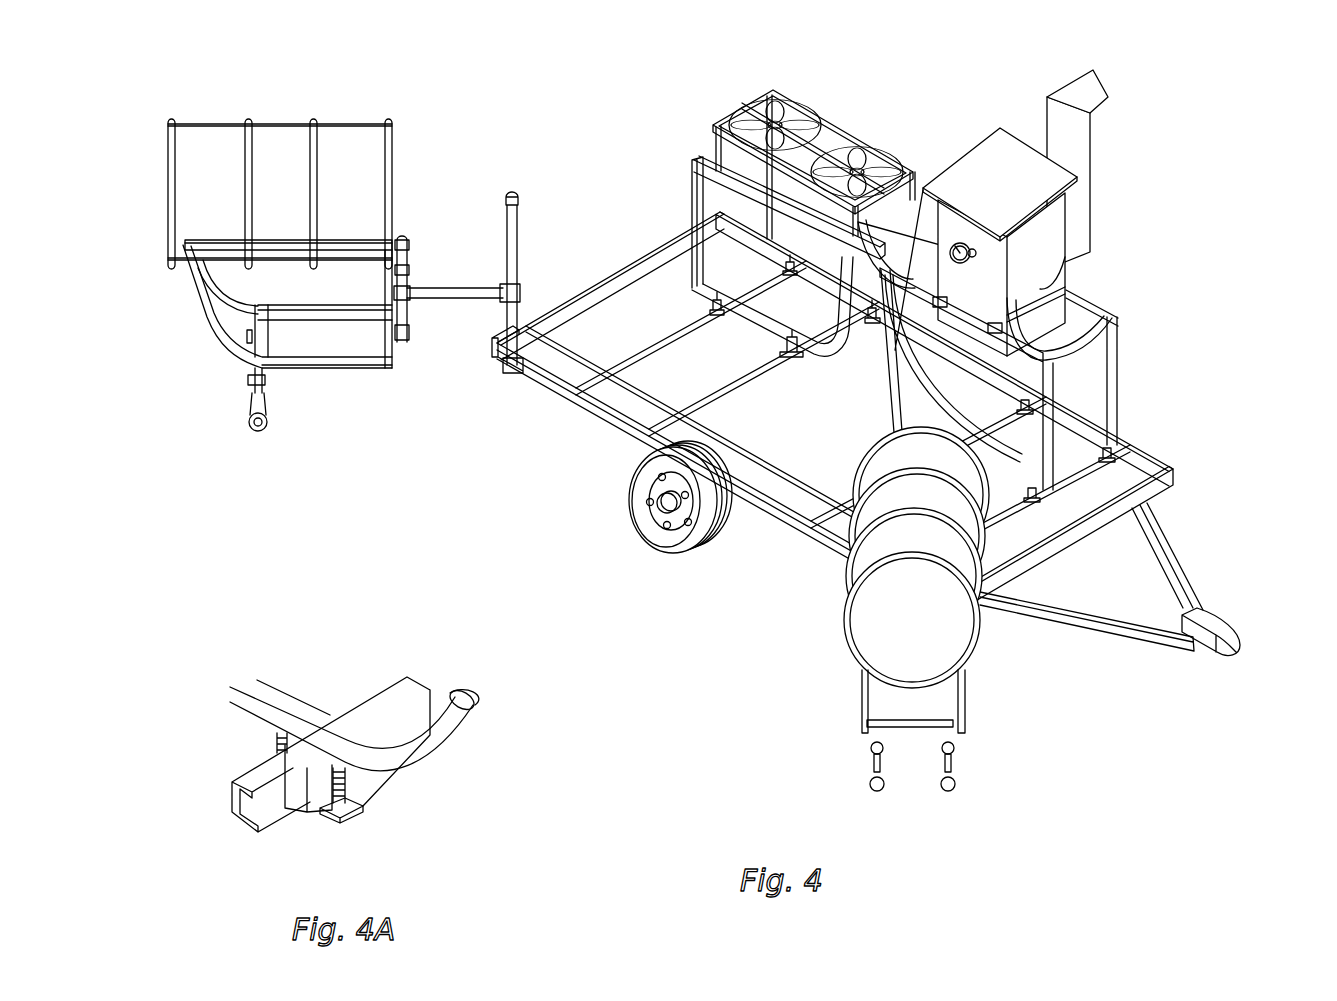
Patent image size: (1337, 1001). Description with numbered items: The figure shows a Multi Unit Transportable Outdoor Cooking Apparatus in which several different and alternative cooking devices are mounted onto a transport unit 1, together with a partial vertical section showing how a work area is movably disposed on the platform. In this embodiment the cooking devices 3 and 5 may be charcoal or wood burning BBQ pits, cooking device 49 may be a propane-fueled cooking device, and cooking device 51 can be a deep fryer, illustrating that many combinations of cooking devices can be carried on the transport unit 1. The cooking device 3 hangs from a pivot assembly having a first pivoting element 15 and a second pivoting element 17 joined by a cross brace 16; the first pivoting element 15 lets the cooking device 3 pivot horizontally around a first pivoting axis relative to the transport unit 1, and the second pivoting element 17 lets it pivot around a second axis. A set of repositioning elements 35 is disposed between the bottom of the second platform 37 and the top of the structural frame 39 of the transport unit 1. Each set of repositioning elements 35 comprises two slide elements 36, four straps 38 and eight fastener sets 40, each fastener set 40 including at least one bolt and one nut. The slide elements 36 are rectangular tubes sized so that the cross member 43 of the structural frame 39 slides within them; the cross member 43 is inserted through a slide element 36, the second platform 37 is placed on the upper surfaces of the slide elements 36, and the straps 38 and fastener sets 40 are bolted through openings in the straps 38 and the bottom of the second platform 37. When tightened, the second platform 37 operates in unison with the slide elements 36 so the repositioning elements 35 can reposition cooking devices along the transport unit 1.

In FIG. 4, the transport unit 1 is at (904, 427).
In FIG. 4, the cooking device 3 is at (206, 122).
In FIG. 4, the cooking device 5 is at (904, 610).
In FIG. 4, the first pivoting element 15 is at (522, 227).
In FIG. 4, the cross brace 16 is at (428, 288).
In FIG. 4, the second pivoting element 17 is at (400, 238).
In FIG. 4, the repositioning elements 35 is at (797, 357).
In FIG. 4A, the repositioning elements 35 is at (542, 809).
In FIG. 4A, the slide elements 36 is at (347, 780).
In FIG. 4, the second platform 37 is at (690, 183).
In FIG. 4A, the second platform 37 is at (467, 742).
In FIG. 4A, the straps 38 is at (347, 810).
In FIG. 4, the structural frame 39 is at (623, 258).
In FIG. 4A, the fastener sets 40 is at (340, 790).
In FIG. 4, the cross member 43 is at (690, 400).
In FIG. 4A, the cross member 43 is at (255, 763).
In FIG. 4, the cooking device 49 is at (788, 98).
In FIG. 4, the cooking device 51 is at (992, 128).